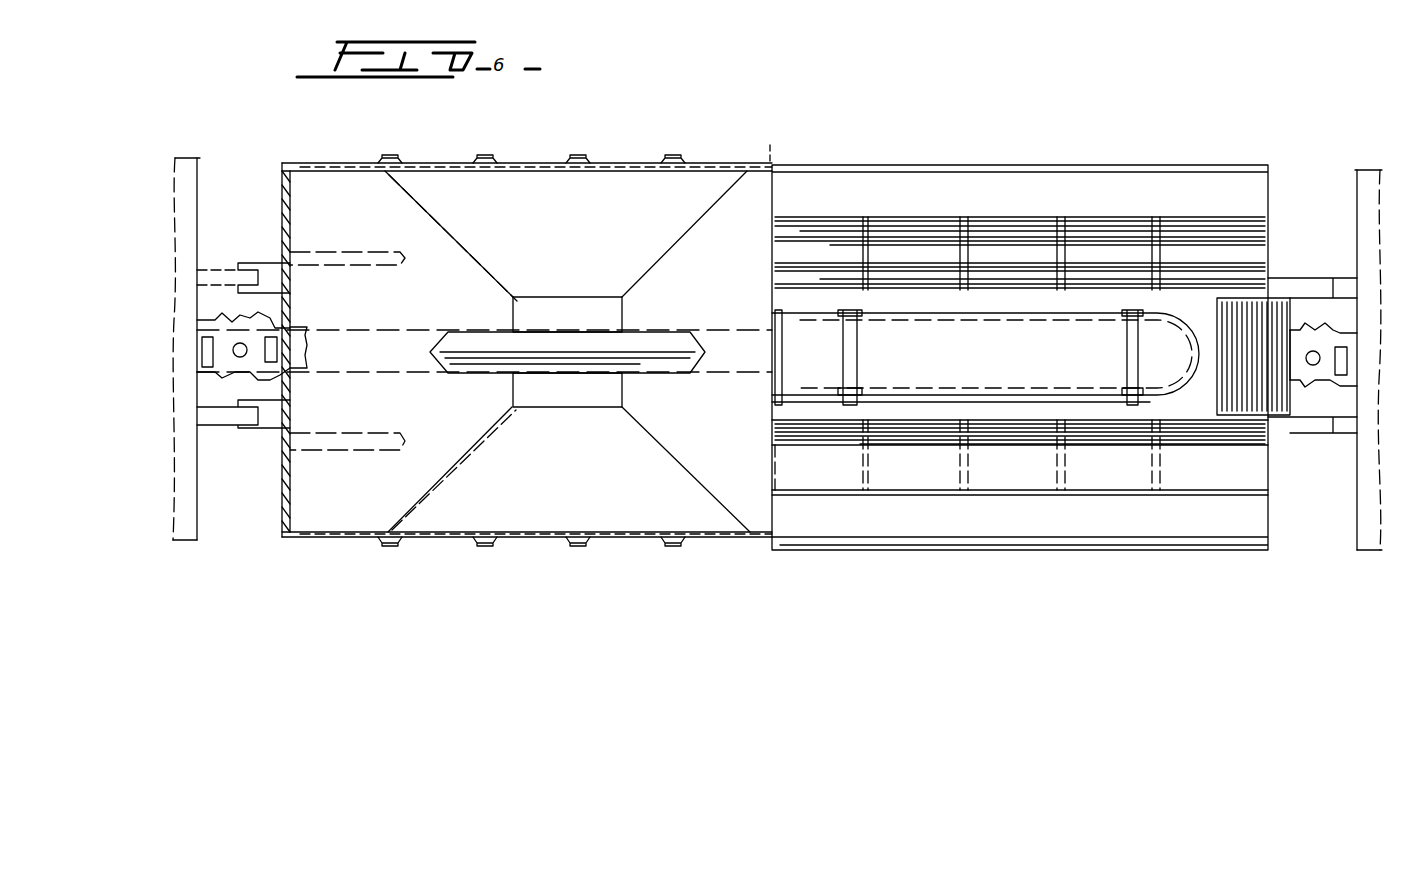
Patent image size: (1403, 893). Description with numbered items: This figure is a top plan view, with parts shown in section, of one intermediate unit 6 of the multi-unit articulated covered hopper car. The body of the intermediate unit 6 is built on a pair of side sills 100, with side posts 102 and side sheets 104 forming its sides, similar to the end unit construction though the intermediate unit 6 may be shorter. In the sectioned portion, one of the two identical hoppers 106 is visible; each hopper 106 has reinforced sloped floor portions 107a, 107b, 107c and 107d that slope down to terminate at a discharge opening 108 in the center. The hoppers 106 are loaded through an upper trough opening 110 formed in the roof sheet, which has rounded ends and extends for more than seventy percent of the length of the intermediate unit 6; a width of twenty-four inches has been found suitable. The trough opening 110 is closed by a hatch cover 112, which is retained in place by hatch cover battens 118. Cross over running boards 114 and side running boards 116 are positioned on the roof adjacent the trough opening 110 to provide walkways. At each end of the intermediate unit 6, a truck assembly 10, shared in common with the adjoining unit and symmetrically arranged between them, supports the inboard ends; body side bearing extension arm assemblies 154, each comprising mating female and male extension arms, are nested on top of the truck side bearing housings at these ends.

The intermediate unit 6 is at (181, 200).
The truck assembly 10 is at (212, 330).
The side sill 100 is at (988, 545).
The side post 102 is at (582, 158).
The side sheet 104 is at (520, 163).
The hopper 106 is at (715, 235).
The sloped floor portion 107a is at (722, 307).
The sloped floor portion 107b is at (426, 307).
The sloped floor portion 107c is at (595, 248).
The sloped floor portion 107d is at (595, 484).
The discharge opening 108 is at (588, 326).
The trough opening 110 is at (893, 345).
The hatch cover 112 is at (1003, 369).
The cross over running board 114 is at (1258, 338).
The side running board 116 is at (982, 235).
The hatch cover batten 118 is at (778, 360).
The body side bearing extension arm assembly 154 is at (240, 275).